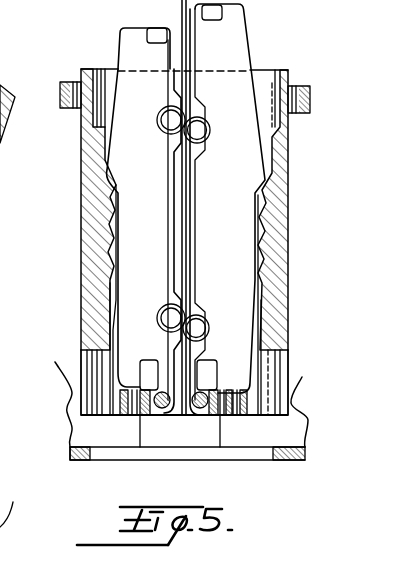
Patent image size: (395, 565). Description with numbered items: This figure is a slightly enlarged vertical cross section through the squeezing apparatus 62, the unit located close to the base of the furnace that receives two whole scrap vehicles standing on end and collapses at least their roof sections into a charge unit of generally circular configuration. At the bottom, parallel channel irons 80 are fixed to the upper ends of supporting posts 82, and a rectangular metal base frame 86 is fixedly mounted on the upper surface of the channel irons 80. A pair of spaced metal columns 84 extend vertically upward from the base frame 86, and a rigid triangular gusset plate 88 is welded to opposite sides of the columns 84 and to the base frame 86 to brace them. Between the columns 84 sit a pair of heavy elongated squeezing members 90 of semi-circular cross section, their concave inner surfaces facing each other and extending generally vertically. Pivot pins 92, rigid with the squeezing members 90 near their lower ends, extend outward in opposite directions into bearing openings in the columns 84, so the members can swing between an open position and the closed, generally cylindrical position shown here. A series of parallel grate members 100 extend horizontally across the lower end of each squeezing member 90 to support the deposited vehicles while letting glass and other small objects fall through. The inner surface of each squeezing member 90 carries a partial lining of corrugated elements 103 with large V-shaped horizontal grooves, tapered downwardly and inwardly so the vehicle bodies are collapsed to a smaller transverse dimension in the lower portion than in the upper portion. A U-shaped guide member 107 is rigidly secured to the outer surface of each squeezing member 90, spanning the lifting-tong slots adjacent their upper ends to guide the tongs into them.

The squeezing apparatus 62 is at (106, 62).
The channel irons 80 is at (2, 477).
The supporting posts 82 is at (13, 502).
The metal columns 84 is at (192, 440).
The base frame 86 is at (281, 463).
The gusset plate 88 is at (178, 380).
The squeezing members 90 is at (90, 157).
The pivot pins 92 is at (155, 362).
The grate members 100 is at (142, 398).
The corrugated elements 103 is at (110, 270).
The U-shaped guide member 107 is at (63, 84).